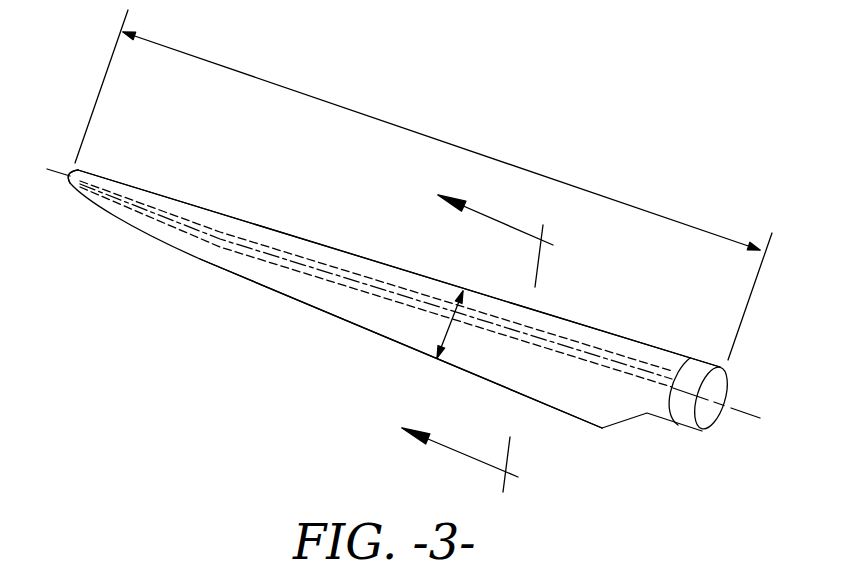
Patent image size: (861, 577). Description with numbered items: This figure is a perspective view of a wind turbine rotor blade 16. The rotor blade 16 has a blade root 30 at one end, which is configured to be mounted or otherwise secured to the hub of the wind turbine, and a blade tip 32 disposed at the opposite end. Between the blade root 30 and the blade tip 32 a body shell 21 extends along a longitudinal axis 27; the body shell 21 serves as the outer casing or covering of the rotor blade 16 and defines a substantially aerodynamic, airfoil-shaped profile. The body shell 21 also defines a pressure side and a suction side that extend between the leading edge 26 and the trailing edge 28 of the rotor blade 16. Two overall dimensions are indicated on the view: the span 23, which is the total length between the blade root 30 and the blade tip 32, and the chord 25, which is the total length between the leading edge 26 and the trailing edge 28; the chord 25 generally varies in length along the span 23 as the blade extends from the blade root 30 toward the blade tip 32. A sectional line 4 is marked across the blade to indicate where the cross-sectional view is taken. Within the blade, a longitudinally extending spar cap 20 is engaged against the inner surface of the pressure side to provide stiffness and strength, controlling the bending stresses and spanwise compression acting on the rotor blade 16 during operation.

The rotor blade 16 is at (653, 142).
The spar cap 20 is at (352, 282).
The body shell 21 is at (277, 272).
The span 23 is at (353, 108).
The chord 25 is at (444, 323).
The leading edge 26 is at (583, 323).
The longitudinal axis 27 is at (740, 403).
The trailing edge 28 is at (563, 417).
The blade root 30 is at (687, 413).
The blade tip 32 is at (71, 175).
The sectional line 4 is at (471, 326).